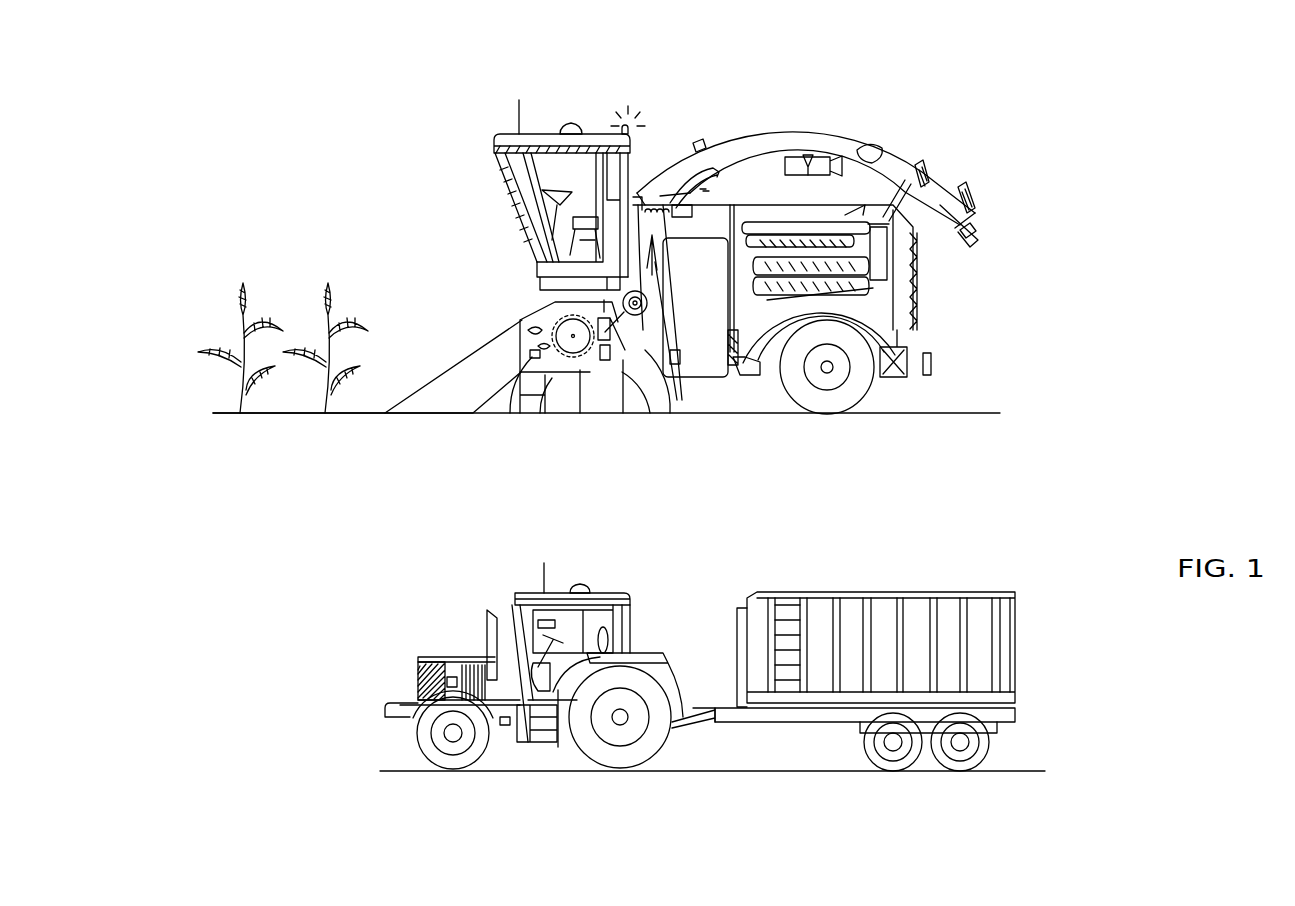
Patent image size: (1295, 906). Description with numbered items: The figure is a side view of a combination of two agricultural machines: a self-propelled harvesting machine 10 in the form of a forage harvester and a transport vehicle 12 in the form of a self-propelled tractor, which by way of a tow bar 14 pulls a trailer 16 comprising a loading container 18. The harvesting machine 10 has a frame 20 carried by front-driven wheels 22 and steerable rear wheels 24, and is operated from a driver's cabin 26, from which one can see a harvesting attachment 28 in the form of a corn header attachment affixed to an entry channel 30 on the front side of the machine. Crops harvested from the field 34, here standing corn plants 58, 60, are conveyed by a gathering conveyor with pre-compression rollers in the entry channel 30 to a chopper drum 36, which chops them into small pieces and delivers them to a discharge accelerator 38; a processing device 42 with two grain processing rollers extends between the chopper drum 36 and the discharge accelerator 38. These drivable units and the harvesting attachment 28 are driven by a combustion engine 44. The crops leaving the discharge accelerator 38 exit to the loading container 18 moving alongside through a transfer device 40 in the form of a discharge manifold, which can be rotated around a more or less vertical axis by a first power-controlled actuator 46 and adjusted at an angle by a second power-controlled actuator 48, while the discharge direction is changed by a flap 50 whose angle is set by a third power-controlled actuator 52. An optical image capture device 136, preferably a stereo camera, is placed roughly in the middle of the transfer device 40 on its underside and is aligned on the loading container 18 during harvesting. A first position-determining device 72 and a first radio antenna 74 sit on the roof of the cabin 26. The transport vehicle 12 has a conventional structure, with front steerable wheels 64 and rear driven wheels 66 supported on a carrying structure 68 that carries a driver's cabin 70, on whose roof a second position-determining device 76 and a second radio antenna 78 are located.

The self-propelled harvesting machine 10 is at (1068, 176).
The transport vehicle 12 is at (532, 771).
The tow bar 14 is at (708, 732).
The trailer 16 is at (856, 771).
The loading container 18 is at (917, 612).
The frame 20 is at (762, 392).
The front-driven wheels 22 is at (563, 397).
The steerable rear wheels 24 is at (827, 403).
The driver's cabin 26 is at (522, 186).
The harvesting attachment 28 is at (443, 378).
The entry channel 30 is at (512, 398).
The field 34 is at (199, 396).
The chopper drum 36 is at (583, 360).
The discharge accelerator 38 is at (672, 392).
The transfer device 40 is at (822, 148).
The processing device 42 is at (621, 350).
The combustion engine 44 is at (863, 250).
The first power-controlled actuator 46 is at (680, 218).
The second power-controlled actuator 48 is at (688, 201).
The flap 50 is at (972, 210).
The third power-controlled actuator 52 is at (868, 150).
The corn plants 58 is at (333, 320).
The crop plant 60 is at (325, 348).
The front steerable wheels 64 is at (424, 750).
The rear driven wheels 66 is at (620, 770).
The carrying structure 68 is at (561, 732).
The driver's cabin 70 is at (614, 600).
The first position-determining device 72 is at (578, 127).
The first radio antenna 74 is at (519, 108).
The second position-determining device 76 is at (586, 584).
The second radio antenna 78 is at (546, 580).
The optical image capture device 136 is at (800, 155).